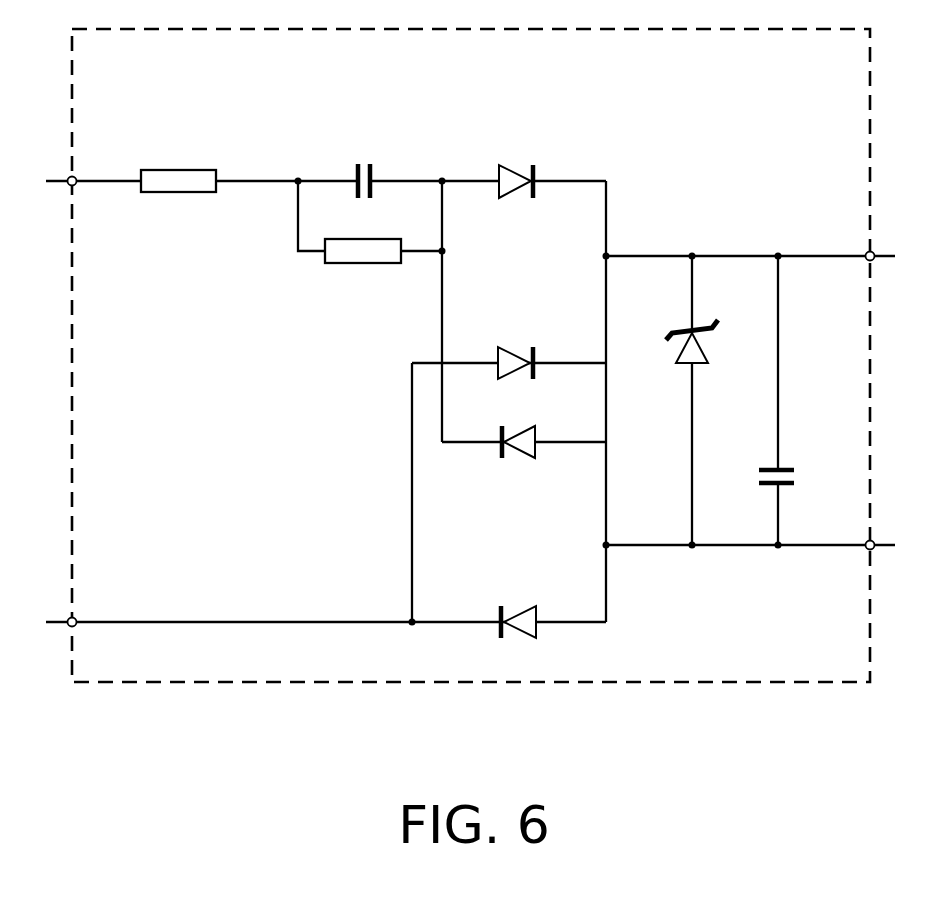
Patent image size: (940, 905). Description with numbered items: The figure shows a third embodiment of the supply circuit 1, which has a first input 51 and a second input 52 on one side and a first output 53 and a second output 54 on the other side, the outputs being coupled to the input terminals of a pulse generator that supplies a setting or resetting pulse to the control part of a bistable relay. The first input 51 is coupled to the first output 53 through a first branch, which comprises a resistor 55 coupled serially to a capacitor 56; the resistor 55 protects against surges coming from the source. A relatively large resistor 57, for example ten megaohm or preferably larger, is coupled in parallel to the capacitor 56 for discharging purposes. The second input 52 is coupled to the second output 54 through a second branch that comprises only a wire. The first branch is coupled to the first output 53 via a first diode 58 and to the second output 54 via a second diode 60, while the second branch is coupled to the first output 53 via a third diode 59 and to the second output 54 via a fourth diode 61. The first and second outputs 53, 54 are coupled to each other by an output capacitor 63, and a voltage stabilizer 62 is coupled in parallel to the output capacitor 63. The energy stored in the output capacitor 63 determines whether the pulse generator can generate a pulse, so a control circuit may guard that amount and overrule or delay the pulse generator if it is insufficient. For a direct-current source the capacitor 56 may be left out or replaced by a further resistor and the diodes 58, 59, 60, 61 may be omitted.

The supply circuit 1 is at (787, 684).
The first input 51 is at (68, 186).
The second input 52 is at (68, 627).
The first output 53 is at (874, 262).
The second output 54 is at (874, 551).
The resistor 55 is at (177, 194).
The capacitor 56 is at (367, 162).
The resistor 57 is at (358, 264).
The first diode 58 is at (512, 170).
The third diode 59 is at (513, 352).
The second diode 60 is at (518, 455).
The fourth diode 61 is at (524, 610).
The voltage stabilizer 62 is at (680, 326).
The output capacitor 63 is at (770, 466).